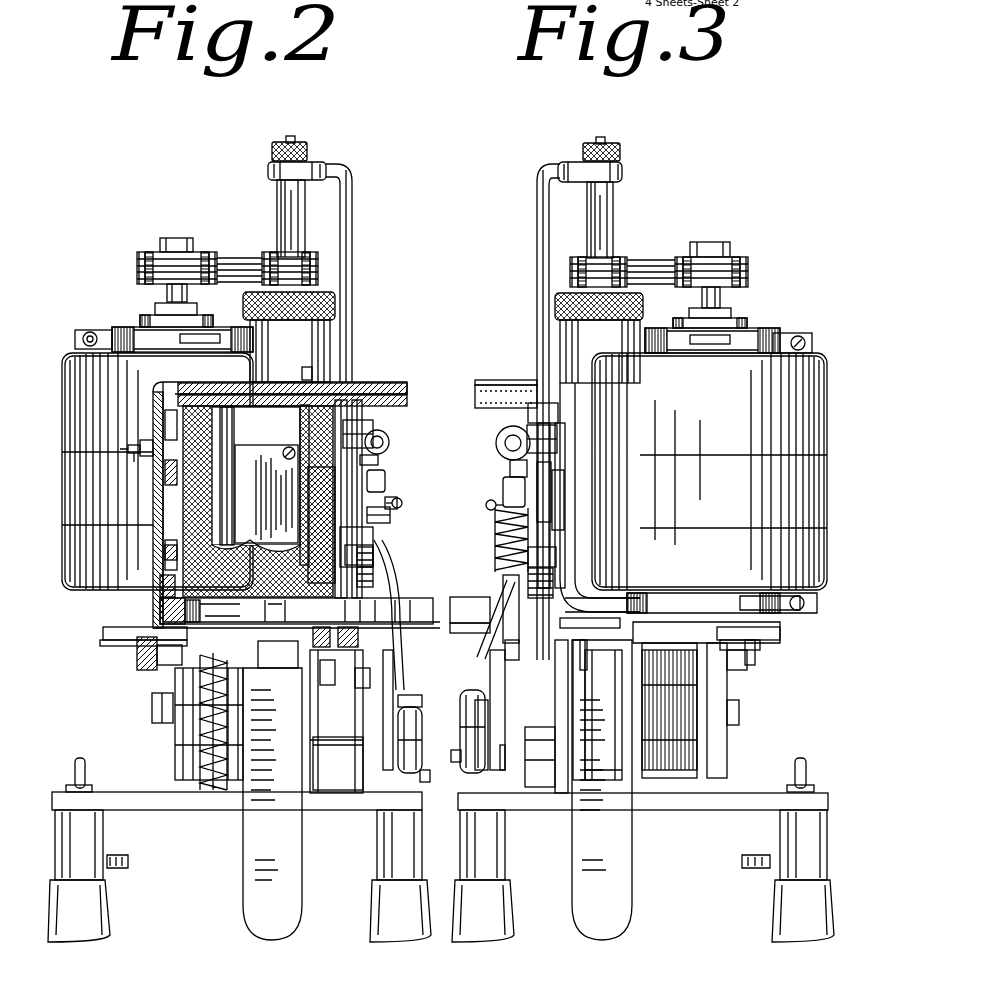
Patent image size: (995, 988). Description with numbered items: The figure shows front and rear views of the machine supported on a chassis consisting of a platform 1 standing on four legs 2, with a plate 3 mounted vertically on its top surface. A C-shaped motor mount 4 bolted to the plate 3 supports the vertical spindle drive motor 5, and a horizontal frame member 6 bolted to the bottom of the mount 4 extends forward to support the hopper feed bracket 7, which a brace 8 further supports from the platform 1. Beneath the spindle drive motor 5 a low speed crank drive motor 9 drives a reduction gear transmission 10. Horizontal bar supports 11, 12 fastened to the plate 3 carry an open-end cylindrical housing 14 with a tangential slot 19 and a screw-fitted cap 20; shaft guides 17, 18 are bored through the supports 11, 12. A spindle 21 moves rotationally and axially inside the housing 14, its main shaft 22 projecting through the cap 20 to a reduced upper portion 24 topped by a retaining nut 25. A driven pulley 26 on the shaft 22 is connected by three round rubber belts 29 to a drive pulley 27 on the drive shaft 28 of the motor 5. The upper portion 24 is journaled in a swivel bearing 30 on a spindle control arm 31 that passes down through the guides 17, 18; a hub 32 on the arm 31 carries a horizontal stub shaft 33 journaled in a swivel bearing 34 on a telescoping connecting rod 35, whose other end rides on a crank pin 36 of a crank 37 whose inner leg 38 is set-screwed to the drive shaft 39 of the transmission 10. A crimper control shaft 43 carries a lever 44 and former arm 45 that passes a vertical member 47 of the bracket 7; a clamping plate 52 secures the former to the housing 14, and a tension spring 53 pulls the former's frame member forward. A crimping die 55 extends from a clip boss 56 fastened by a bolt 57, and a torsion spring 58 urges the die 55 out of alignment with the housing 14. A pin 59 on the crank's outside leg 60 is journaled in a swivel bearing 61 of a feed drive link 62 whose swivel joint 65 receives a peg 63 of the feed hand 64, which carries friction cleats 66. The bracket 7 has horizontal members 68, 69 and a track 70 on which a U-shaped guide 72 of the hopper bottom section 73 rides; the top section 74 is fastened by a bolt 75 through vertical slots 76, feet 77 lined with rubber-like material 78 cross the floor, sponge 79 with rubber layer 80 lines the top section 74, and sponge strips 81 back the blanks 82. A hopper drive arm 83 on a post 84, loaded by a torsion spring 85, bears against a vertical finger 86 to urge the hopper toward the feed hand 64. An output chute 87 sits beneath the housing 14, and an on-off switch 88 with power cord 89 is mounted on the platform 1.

In FIG. 2, the platform 1 is at (150, 806).
In FIG. 3, the platform 1 is at (713, 806).
In FIG. 2, the legs 2 is at (80, 838).
In FIG. 3, the legs 2 is at (470, 846).
In FIG. 2, the plate 3 is at (310, 692).
In FIG. 3, the plate 3 is at (560, 795).
In FIG. 2, the C-shaped motor mount 4 is at (118, 330).
In FIG. 3, the C-shaped motor mount 4 is at (780, 332).
In FIG. 2, the spindle drive motor 5 is at (75, 338).
In FIG. 3, the spindle drive motor 5 is at (812, 350).
In FIG. 3, the horizontal frame member 6 is at (625, 612).
In FIG. 2, the hopper feed bracket 7 is at (360, 640).
In FIG. 2, the brace 8 is at (365, 655).
In FIG. 3, the brace 8 is at (535, 795).
In FIG. 2, the low speed crank drive motor 9 is at (152, 702).
In FIG. 3, the low speed crank drive motor 9 is at (728, 685).
In FIG. 2, the reduction gear transmission 10 is at (278, 654).
In FIG. 3, the reduction gear transmission 10 is at (612, 800).
In FIG. 2, the horizontal bar support 11 is at (360, 415).
In FIG. 3, the horizontal bar support 11 is at (535, 428).
In FIG. 2, the horizontal bar support 12 is at (380, 553).
In FIG. 3, the horizontal bar support 12 is at (556, 552).
In FIG. 2, the cylindrical housing 14 is at (331, 332).
In FIG. 3, the cylindrical housing 14 is at (560, 333).
In FIG. 3, the shaft guide 17 is at (506, 396).
In FIG. 3, the shaft guide 18 is at (500, 558).
In FIG. 2, the slot 19 is at (302, 370).
In FIG. 2, the cap 20 is at (337, 300).
In FIG. 3, the cap 20 is at (644, 300).
In FIG. 2, the spindle 21 is at (274, 217).
In FIG. 3, the spindle 21 is at (614, 218).
In FIG. 2, the main shaft 22 is at (277, 186).
In FIG. 3, the main shaft 22 is at (613, 190).
In FIG. 2, the upper portion of the main shaft 24 is at (293, 137).
In FIG. 3, the upper portion of the main shaft 24 is at (606, 138).
In FIG. 2, the retaining nut 25 is at (308, 150).
In FIG. 3, the retaining nut 25 is at (622, 150).
In FIG. 2, the driven pulley 26 is at (310, 256).
In FIG. 3, the driven pulley 26 is at (626, 260).
In FIG. 2, the drive pulley 27 is at (150, 254).
In FIG. 3, the drive pulley 27 is at (745, 262).
In FIG. 2, the drive shaft 28 is at (167, 292).
In FIG. 3, the drive shaft 28 is at (720, 298).
In FIG. 2, the rubber belts 29 is at (232, 264).
In FIG. 3, the rubber belts 29 is at (665, 266).
In FIG. 2, the swivel bearing 30 is at (268, 170).
In FIG. 3, the swivel bearing 30 is at (623, 172).
In FIG. 2, the spindle control arm 31 is at (353, 208).
In FIG. 3, the spindle control arm 31 is at (537, 224).
In FIG. 2, the hub 32 is at (380, 428).
In FIG. 3, the hub 32 is at (500, 432).
In FIG. 2, the roller 33 is at (389, 446).
In FIG. 3, the roller 33 is at (560, 443).
In FIG. 2, the swivel bearing 34 is at (378, 460).
In FIG. 3, the swivel bearing 34 is at (512, 468).
In FIG. 2, the connecting rod 35 is at (385, 478).
In FIG. 3, the connecting rod 35 is at (525, 466).
In FIG. 2, the crank pin 36 is at (372, 672).
In FIG. 3, the crank pin 36 is at (505, 645).
In FIG. 2, the crank 37 is at (414, 698).
In FIG. 3, the crank 37 is at (460, 721).
In FIG. 2, the inner leg of the crank 38 is at (320, 672).
In FIG. 3, the inner leg of the crank 38 is at (585, 683).
In FIG. 3, the drive shaft 39 is at (580, 702).
In FIG. 2, the crimper control shaft 43 is at (300, 478).
In FIG. 3, the crimper control shaft 43 is at (551, 490).
In FIG. 2, the lever 44 is at (391, 524).
In FIG. 3, the lever 44 is at (495, 527).
In FIG. 2, the former arm 45 is at (308, 527).
In FIG. 3, the former arm 45 is at (564, 508).
In FIG. 2, the vertical member 47 is at (300, 440).
In FIG. 2, the clamping plate 52 is at (240, 445).
In FIG. 2, the tension spring 53 is at (374, 540).
In FIG. 3, the crimping die 55 is at (590, 621).
In FIG. 3, the clip boss 56 is at (500, 630).
In FIG. 3, the bolt 57 is at (470, 601).
In FIG. 2, the torsion spring 58 is at (375, 580).
In FIG. 3, the torsion spring 58 is at (553, 576).
In FIG. 2, the pin 59 is at (428, 782).
In FIG. 3, the pin 59 is at (455, 750).
In FIG. 2, the outside leg of the crank 60 is at (398, 737).
In FIG. 3, the outside leg of the crank 60 is at (490, 741).
In FIG. 2, the swivel bearing 61 is at (385, 707).
In FIG. 3, the swivel bearing 61 is at (488, 706).
In FIG. 2, the feed drive link 62 is at (400, 568).
In FIG. 3, the feed drive link 62 is at (480, 605).
In FIG. 2, the peg 63 is at (403, 503).
In FIG. 3, the peg 63 is at (486, 505).
In FIG. 2, the feed hand 64 is at (300, 495).
In FIG. 2, the swivel joint 65 is at (400, 512).
In FIG. 2, the cleats 66 is at (268, 532).
In FIG. 2, the horizontal member 68 is at (288, 612).
In FIG. 2, the horizontal member 69 is at (364, 612).
In FIG. 2, the track 70 is at (105, 643).
In FIG. 3, the track 70 is at (780, 634).
In FIG. 2, the U-shaped guide 72 is at (103, 632).
In FIG. 3, the U-shaped guide 72 is at (760, 645).
In FIG. 2, the bottom section of the hopper 73 is at (160, 582).
In FIG. 2, the top section of the hopper 74 is at (153, 405).
In FIG. 3, the top section of the hopper 74 is at (508, 380).
In FIG. 2, the bolt 75 is at (135, 458).
In FIG. 2, the vertical slots 76 is at (143, 448).
In FIG. 2, the feet 77 is at (233, 623).
In FIG. 2, the rubber-like material 78 is at (231, 614).
In FIG. 2, the resilient sponge material 79 is at (407, 388).
In FIG. 3, the resilient sponge material 79 is at (475, 395).
In FIG. 2, the rubber-like material 80 is at (408, 402).
In FIG. 3, the rubber-like material 80 is at (528, 410).
In FIG. 2, the strips of resilient sponge material 81 is at (140, 558).
In FIG. 2, the blanks 82 is at (302, 425).
In FIG. 2, the hopper drive arm 83 is at (137, 650).
In FIG. 3, the hopper drive arm 83 is at (755, 655).
In FIG. 2, the post 84 is at (213, 795).
In FIG. 2, the torsion spring 85 is at (185, 745).
In FIG. 2, the vertical finger 86 is at (157, 660).
In FIG. 3, the vertical finger 86 is at (747, 661).
In FIG. 2, the output chute 87 is at (251, 888).
In FIG. 3, the output chute 87 is at (625, 900).
In FIG. 2, the on-off switch 88 is at (80, 758).
In FIG. 3, the on-off switch 88 is at (803, 758).
In FIG. 2, the power cord 89 is at (120, 870).
In FIG. 3, the power cord 89 is at (752, 870).